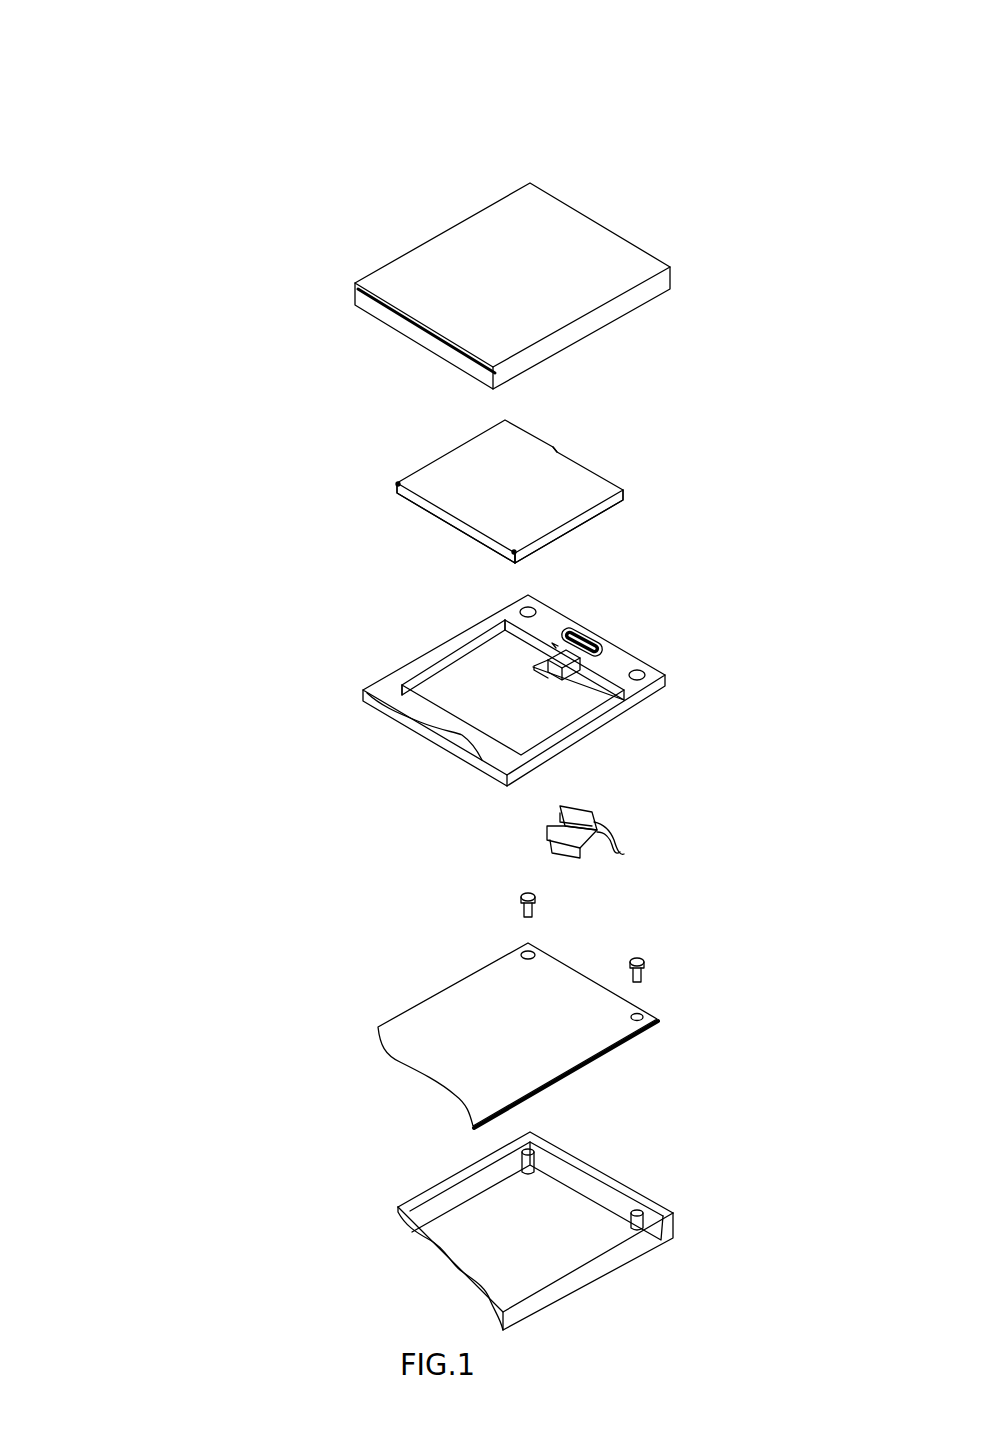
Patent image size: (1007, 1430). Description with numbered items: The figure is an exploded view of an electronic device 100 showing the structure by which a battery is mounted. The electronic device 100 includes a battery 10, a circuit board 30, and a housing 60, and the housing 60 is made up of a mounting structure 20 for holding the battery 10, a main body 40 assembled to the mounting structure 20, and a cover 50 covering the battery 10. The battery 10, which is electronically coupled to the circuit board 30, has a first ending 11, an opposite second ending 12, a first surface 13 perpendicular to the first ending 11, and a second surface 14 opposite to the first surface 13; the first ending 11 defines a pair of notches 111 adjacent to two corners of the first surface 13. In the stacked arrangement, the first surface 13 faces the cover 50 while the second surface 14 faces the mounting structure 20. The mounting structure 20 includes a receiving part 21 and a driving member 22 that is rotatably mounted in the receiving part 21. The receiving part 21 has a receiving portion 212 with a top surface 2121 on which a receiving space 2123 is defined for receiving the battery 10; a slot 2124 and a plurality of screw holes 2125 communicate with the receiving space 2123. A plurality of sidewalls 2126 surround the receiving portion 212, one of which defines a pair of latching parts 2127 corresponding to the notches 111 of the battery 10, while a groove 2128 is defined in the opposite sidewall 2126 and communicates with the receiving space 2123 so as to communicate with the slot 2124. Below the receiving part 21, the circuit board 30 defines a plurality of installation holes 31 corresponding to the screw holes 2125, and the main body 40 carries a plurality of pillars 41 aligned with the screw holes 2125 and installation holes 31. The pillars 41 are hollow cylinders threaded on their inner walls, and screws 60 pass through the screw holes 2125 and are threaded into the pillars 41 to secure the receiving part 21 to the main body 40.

The electronic device 100 is at (505, 29).
The cover 50 is at (492, 272).
The battery 10 is at (551, 494).
The first ending 11 is at (455, 525).
The notches 111 is at (397, 485).
The second ending 12 is at (533, 435).
The first surface 13 is at (453, 470).
The second surface 14 is at (570, 533).
The mounting structure 20 is at (210, 782).
The receiving part 21 is at (478, 755).
The receiving portion 212 is at (367, 683).
The top surface 2121 is at (615, 662).
The receiving space 2123 is at (525, 727).
The slot 2124 is at (584, 632).
The screw holes 2125 is at (645, 682).
The sidewalls 2126 is at (520, 633).
The latching parts 2127 is at (402, 682).
The groove 2128 is at (585, 676).
The driving member 22 is at (540, 845).
The housing; screws 60 is at (155, 290).
The circuit board 30 is at (503, 1078).
The installation holes 31 is at (652, 1020).
The main body 40 is at (507, 1274).
The pillars 41 is at (640, 1222).